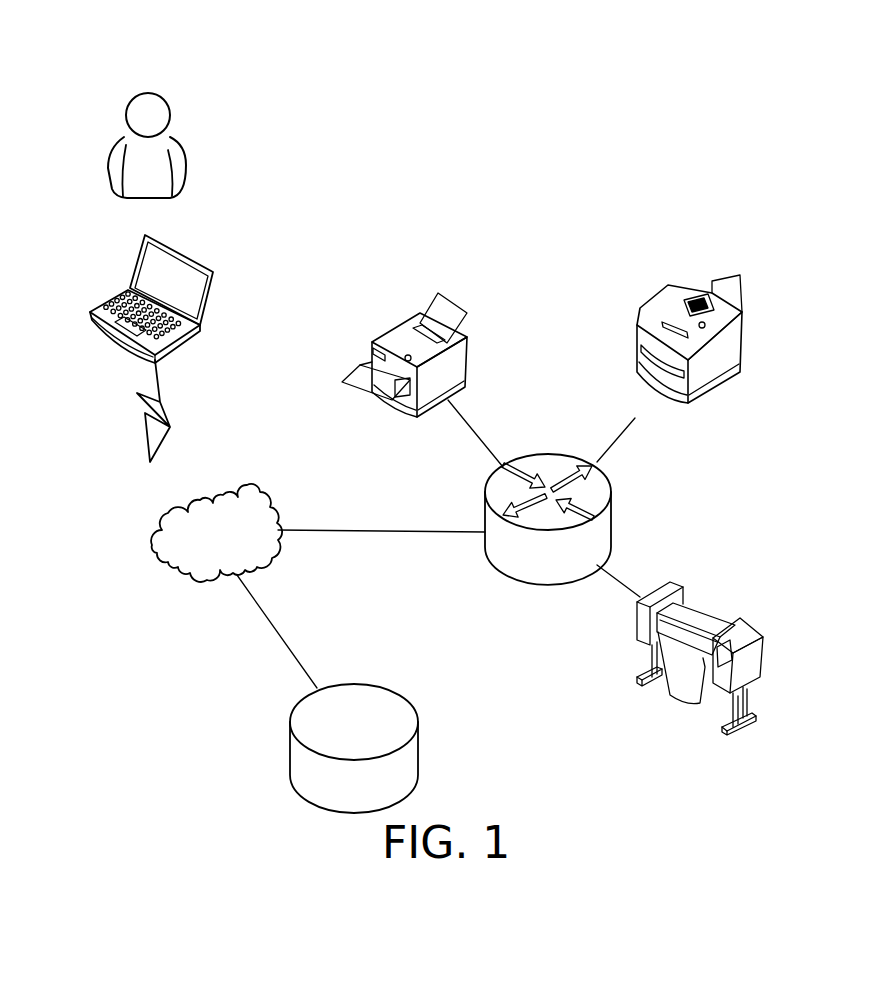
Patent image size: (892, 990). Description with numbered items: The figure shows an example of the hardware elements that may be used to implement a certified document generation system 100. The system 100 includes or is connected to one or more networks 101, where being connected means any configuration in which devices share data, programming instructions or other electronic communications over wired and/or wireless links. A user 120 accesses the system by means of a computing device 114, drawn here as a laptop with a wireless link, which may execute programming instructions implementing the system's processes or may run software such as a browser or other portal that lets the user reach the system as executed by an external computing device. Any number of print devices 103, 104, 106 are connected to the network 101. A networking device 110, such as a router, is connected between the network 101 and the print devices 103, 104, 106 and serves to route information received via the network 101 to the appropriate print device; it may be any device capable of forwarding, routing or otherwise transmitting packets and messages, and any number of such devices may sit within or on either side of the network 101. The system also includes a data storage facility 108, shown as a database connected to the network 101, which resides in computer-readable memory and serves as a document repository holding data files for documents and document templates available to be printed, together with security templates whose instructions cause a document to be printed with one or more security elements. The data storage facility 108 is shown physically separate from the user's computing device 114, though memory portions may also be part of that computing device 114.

The certified document generation system 100 is at (202, 48).
The network 101 is at (167, 517).
The print device 103 is at (385, 332).
The print device 104 is at (650, 297).
The print device 106 is at (753, 632).
The data storage facility 108 is at (292, 715).
The networking device 110 is at (613, 512).
The computing device 114 is at (140, 251).
The user 120 is at (125, 117).